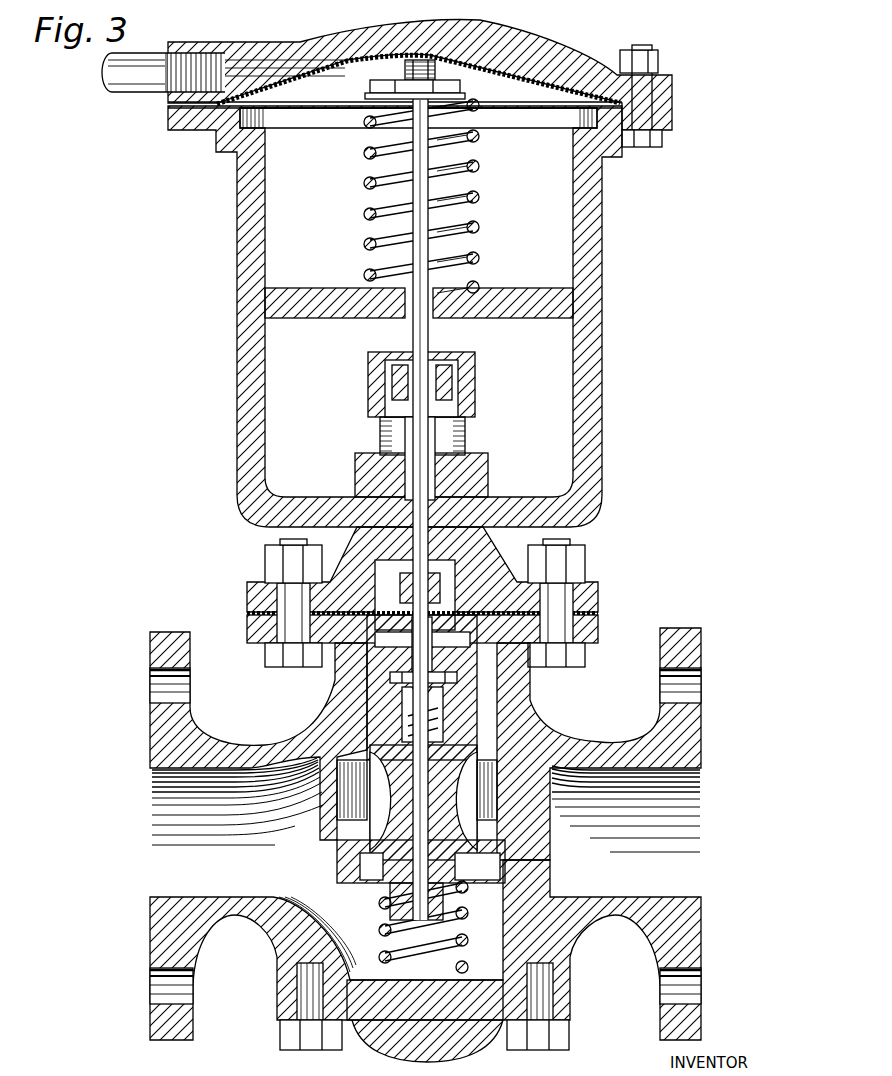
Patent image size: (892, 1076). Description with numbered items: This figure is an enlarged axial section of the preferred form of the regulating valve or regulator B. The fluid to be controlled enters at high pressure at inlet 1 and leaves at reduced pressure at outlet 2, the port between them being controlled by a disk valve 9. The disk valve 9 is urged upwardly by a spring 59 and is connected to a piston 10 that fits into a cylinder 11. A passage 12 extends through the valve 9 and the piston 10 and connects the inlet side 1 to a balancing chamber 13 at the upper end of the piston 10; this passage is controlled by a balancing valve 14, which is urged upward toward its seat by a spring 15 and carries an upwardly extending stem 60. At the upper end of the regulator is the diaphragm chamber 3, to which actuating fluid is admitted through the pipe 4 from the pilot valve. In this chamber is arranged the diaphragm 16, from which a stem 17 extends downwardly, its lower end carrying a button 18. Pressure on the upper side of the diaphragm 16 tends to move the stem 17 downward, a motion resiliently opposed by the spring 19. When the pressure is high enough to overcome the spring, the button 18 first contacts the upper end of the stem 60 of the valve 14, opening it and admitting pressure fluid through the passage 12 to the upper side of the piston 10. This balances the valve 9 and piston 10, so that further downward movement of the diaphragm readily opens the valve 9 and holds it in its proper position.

The inlet 1 is at (160, 838).
The outlet 2 is at (684, 808).
The diaphragm chamber 3 is at (320, 87).
The pipe 4 is at (133, 90).
The disk valve 9 is at (503, 862).
The piston 10 is at (468, 677).
The cylinder 11 is at (490, 690).
The passage 12 is at (430, 808).
The balancing chamber 13 is at (505, 574).
The balancing valve 14 is at (405, 662).
The spring 15 is at (440, 717).
The diaphragm 16 is at (540, 72).
The stem 17 is at (428, 341).
The button 18 is at (453, 588).
The spring 19 is at (483, 171).
The spring 59 is at (468, 944).
The stem 60 is at (398, 652).
The regulating valve B is at (226, 324).